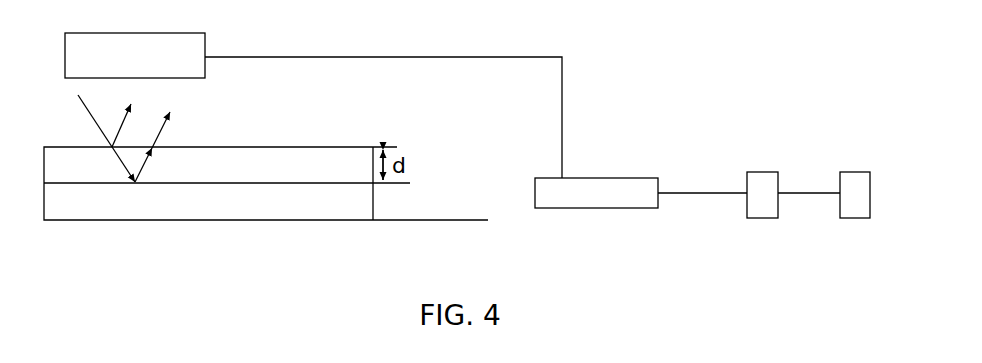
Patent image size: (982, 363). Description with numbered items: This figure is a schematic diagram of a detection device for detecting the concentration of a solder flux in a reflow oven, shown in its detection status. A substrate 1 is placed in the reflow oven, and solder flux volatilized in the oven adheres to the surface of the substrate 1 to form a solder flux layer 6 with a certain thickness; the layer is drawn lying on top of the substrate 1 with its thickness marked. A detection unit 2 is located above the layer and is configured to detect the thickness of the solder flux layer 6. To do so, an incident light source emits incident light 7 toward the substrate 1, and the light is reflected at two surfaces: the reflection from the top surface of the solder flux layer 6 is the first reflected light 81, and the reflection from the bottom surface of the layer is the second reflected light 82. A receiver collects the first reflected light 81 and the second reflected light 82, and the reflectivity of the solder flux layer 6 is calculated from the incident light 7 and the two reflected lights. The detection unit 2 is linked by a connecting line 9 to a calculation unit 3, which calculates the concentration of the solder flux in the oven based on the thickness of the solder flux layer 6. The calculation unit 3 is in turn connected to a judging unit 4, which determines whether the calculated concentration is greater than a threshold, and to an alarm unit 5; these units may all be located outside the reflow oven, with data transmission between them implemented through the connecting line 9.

The substrate 1 is at (283, 203).
The detection unit 2 is at (132, 43).
The calculation unit 3 is at (615, 188).
The judging unit 4 is at (767, 178).
The alarm unit 5 is at (853, 178).
The solder flux layer 6 is at (300, 157).
The incident light 7 is at (81, 103).
The connecting line 9 is at (407, 55).
The first reflected light 81 is at (136, 98).
The second reflected light 82 is at (173, 113).